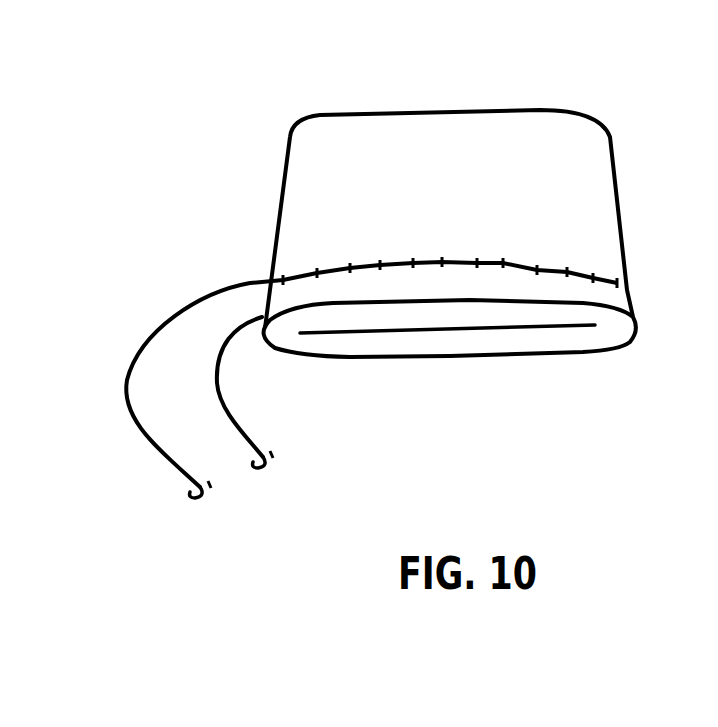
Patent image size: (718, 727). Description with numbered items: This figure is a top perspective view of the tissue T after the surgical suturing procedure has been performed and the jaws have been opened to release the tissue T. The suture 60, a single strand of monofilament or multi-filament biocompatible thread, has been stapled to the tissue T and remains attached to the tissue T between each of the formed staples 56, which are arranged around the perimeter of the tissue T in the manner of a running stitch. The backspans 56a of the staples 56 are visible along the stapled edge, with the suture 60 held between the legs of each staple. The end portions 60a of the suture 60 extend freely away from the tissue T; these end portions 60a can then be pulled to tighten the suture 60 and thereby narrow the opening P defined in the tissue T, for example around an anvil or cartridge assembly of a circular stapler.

The tissue T is at (453, 132).
The opening P is at (460, 333).
The staples 56 is at (507, 261).
The backspans 56a is at (567, 270).
The suture 60 is at (222, 288).
The end portions 60a is at (220, 357).